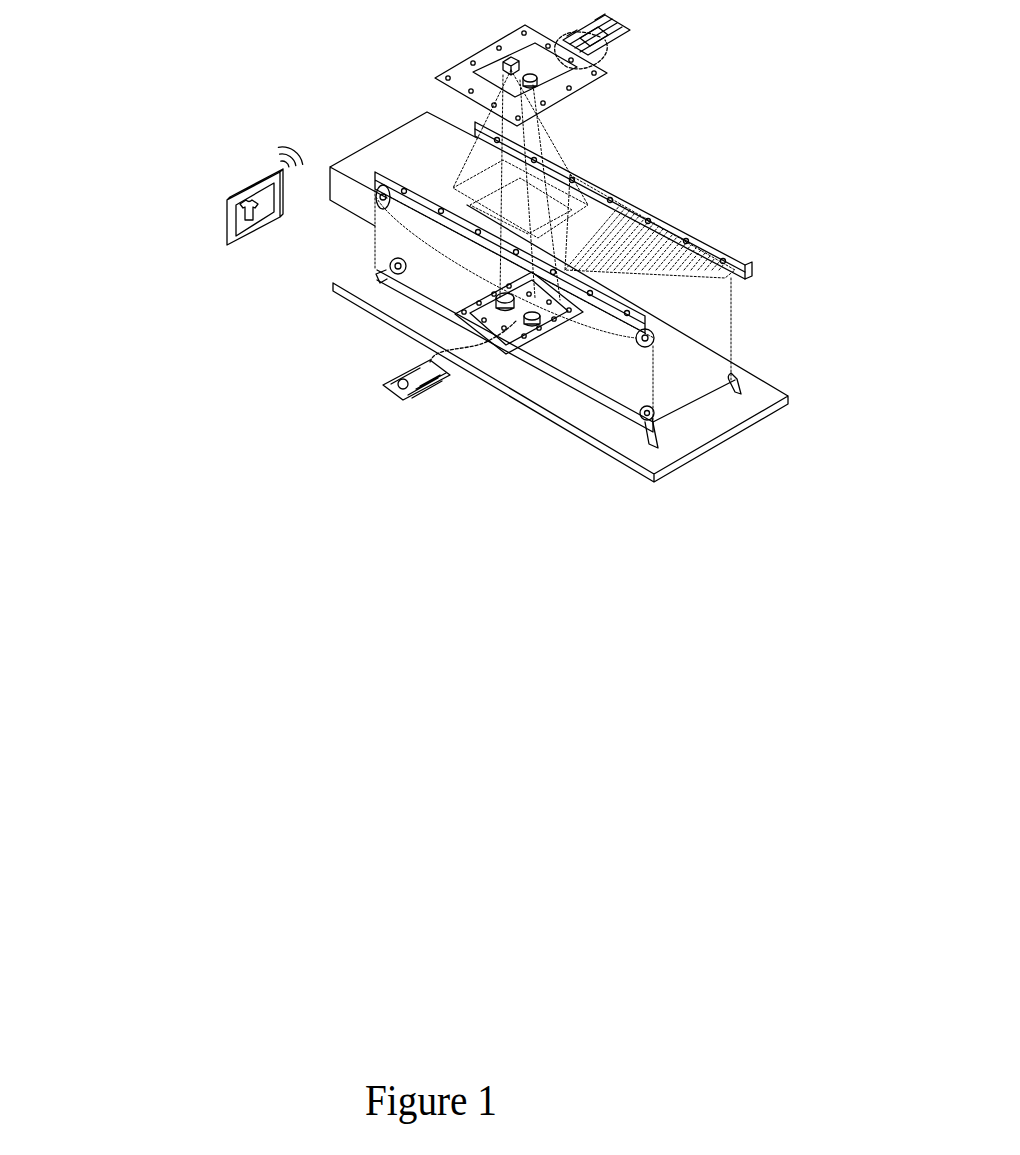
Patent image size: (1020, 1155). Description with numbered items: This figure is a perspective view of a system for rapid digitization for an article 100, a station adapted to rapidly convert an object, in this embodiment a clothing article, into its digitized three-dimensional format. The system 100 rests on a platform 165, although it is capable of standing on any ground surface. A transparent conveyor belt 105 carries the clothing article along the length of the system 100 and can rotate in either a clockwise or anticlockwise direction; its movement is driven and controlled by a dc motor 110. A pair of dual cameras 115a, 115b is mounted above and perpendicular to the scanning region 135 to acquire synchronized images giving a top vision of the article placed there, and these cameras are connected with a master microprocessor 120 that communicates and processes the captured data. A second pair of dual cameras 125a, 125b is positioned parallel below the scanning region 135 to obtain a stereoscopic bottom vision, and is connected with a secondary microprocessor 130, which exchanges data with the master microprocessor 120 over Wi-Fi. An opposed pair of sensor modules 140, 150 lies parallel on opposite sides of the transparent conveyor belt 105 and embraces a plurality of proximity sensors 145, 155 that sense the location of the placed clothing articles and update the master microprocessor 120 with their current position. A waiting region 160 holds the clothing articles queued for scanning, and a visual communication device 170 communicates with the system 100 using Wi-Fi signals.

The system for rapid digitization for an article 100 is at (472, 644).
The transparent conveyor belt 105 is at (400, 235).
The dc motor 110 is at (373, 153).
The dual camera 115a is at (510, 62).
The dual camera 115b is at (580, 92).
The master microprocessor 120 is at (617, 23).
The dual camera 125a is at (462, 314).
The dual camera 125b is at (527, 326).
The secondary microprocessor 130 is at (392, 393).
The scanning region 135 is at (585, 165).
The sensor module 140 is at (680, 228).
The proximity sensors 145 is at (707, 238).
The sensor module 150 is at (590, 318).
The proximity sensors 155 is at (617, 322).
The waiting region 160 is at (640, 268).
The platform 165 is at (753, 390).
The visual communication device 170 is at (240, 184).